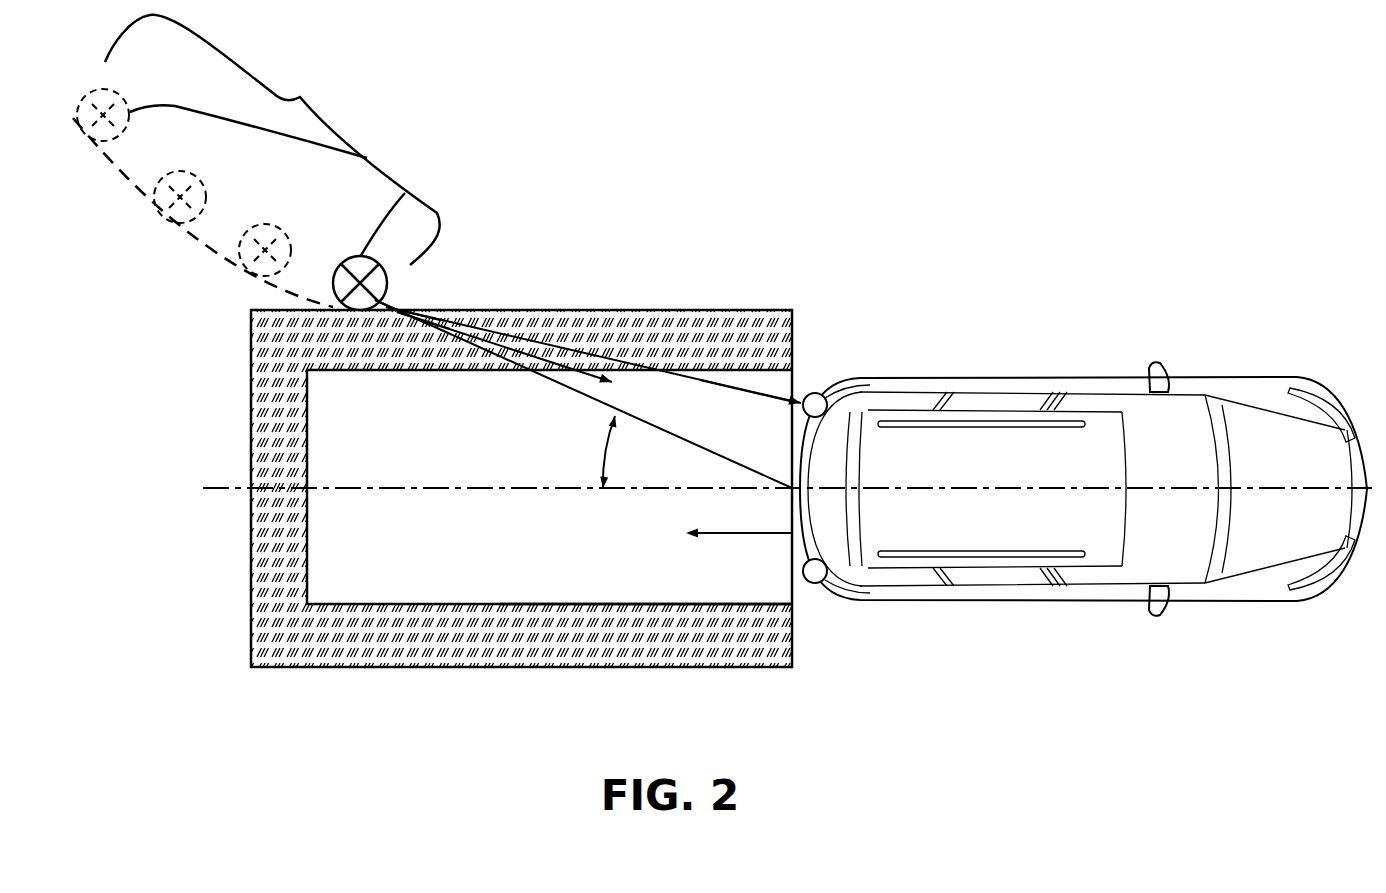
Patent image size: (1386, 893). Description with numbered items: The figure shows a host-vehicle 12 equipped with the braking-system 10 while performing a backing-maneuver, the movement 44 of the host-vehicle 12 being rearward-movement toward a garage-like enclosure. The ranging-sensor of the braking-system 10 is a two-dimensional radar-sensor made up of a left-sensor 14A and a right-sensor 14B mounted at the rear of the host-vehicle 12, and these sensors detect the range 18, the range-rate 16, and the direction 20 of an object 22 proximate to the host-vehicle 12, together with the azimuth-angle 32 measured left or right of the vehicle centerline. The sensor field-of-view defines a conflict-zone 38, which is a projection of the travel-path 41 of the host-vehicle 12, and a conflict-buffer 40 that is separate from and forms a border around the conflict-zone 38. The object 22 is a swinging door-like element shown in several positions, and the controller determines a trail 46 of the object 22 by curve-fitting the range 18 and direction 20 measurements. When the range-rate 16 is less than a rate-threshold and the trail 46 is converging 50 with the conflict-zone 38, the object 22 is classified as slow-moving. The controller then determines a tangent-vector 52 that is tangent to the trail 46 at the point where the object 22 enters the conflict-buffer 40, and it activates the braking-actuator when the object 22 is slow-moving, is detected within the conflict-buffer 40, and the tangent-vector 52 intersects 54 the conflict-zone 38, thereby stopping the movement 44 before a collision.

The braking-system 10 is at (1115, 92).
The host-vehicle 12 is at (1253, 378).
The left-sensor 14A is at (817, 392).
The right-sensor 14B is at (817, 584).
The range-rate 16 is at (702, 378).
The range 18 is at (750, 392).
The direction 20 is at (588, 398).
The object 22 is at (378, 160).
The azimuth-angle 32 is at (603, 452).
The conflict-zone 38 is at (450, 570).
The conflict-buffer 40 is at (310, 645).
The travel-path 41 is at (625, 577).
The movement 44 is at (724, 536).
The trail 46 is at (115, 177).
The converging 50 is at (300, 97).
The tangent-vector 52 is at (398, 327).
The intersects 54 is at (561, 372).